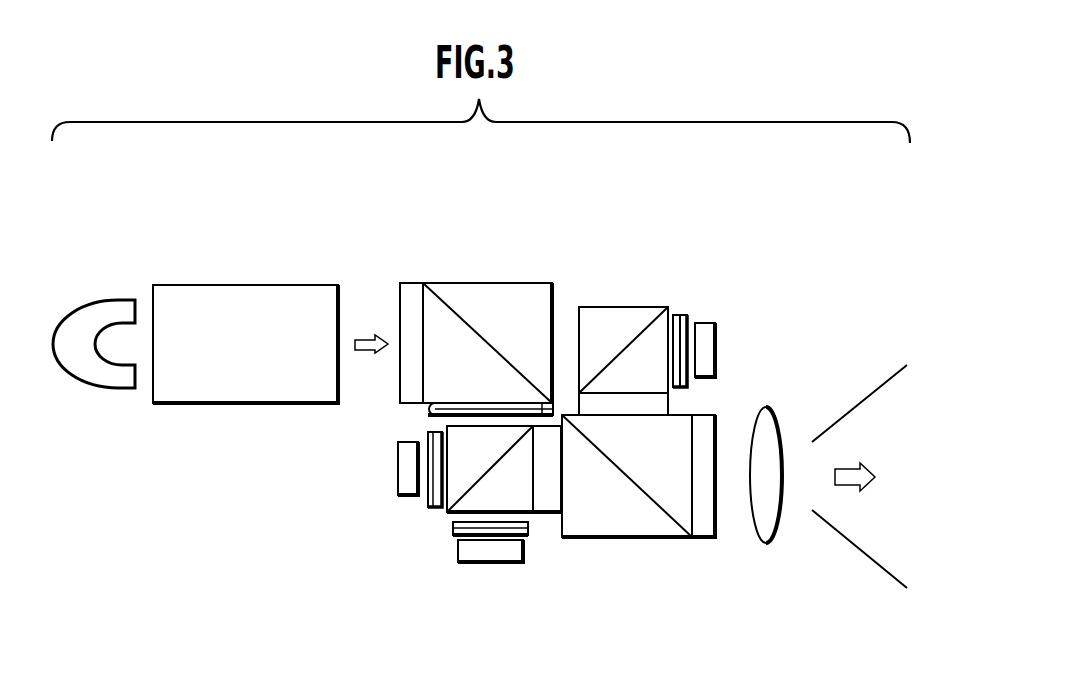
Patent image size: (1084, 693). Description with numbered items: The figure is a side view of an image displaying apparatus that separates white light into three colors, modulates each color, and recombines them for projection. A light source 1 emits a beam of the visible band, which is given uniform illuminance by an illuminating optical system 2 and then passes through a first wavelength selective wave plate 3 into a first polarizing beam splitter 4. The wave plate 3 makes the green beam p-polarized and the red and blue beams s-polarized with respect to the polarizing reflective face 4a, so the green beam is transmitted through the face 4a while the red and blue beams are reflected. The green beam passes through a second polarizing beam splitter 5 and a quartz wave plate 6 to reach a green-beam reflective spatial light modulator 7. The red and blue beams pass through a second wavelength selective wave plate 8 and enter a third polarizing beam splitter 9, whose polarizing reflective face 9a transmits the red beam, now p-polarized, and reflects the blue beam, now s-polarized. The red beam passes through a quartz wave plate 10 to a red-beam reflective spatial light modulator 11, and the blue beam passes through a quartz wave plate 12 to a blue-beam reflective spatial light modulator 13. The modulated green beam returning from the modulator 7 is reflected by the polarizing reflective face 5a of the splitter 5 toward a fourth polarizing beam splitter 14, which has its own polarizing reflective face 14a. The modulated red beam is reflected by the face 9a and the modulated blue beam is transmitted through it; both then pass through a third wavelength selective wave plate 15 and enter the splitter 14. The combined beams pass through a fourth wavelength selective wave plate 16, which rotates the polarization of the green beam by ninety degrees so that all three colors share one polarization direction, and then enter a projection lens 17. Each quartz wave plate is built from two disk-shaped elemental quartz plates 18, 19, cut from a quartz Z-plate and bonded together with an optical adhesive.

The light source 1 is at (113, 310).
The illuminating optical system 2 is at (255, 307).
The first wavelength selective wave plate 3 is at (413, 288).
The first polarizing beam splitter 4 is at (487, 301).
The polarizing reflective face 4a is at (493, 345).
The second polarizing beam splitter 5 is at (623, 323).
The polarizing reflective face 5a is at (628, 340).
The quartz wave plate 6 is at (712, 289).
The green-beam reflective spatial light modulator 7 is at (688, 290).
The second wavelength selective wave plate 8 is at (425, 408).
The third polarizing beam splitter 9 is at (449, 485).
The polarizing reflective face 9a is at (513, 438).
The quartz wave plate 10 is at (453, 528).
The red-beam reflective spatial light modulator 11 is at (480, 550).
The quartz wave plate 12 is at (428, 500).
The blue-beam reflective spatial light modulator 13 is at (398, 465).
The fourth polarizing beam splitter 14 is at (627, 510).
The polarizing reflective face 14a is at (632, 478).
The third wavelength selective wave plate 15 is at (548, 505).
The fourth wavelength selective wave plate 16 is at (703, 540).
The projection lens 17 is at (765, 535).
The elemental quartz plate 18 is at (672, 315).
The elemental quartz plate 19 is at (690, 322).